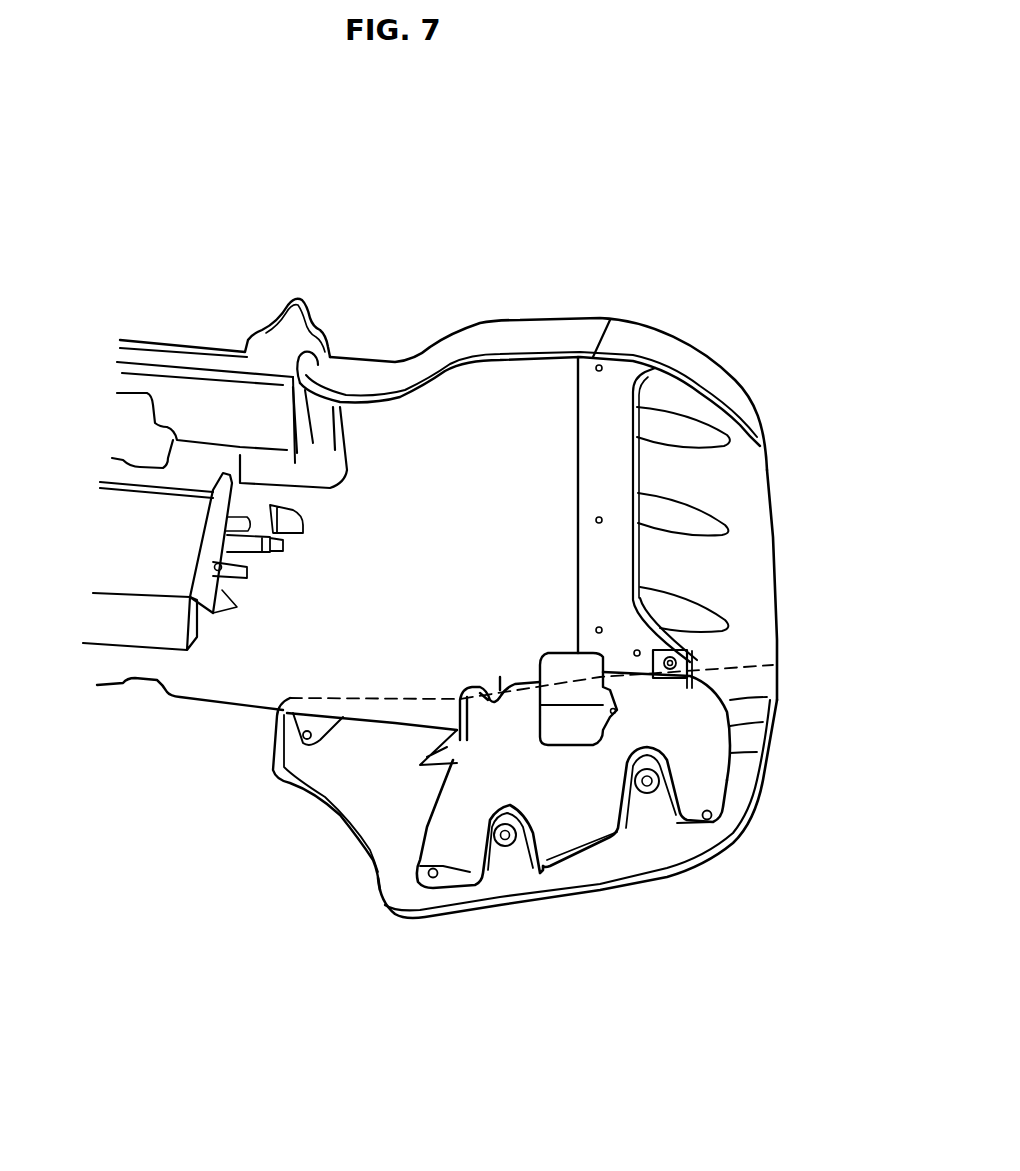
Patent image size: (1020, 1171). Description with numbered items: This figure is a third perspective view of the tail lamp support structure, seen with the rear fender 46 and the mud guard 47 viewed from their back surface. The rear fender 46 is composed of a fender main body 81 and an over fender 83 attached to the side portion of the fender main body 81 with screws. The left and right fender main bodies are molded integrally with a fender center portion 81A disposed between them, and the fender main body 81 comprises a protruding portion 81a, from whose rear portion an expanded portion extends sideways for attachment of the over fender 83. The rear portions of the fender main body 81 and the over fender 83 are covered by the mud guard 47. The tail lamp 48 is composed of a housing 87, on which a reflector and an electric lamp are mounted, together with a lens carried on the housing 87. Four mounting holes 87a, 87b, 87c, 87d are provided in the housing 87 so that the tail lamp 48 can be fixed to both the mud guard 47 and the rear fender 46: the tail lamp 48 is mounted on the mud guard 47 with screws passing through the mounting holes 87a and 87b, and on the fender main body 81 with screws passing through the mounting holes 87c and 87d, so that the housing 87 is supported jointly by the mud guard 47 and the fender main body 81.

The rear fender 46 is at (168, 713).
The mud guard 47 is at (336, 852).
The tail lamp 48 is at (577, 813).
The fender main body 81 is at (490, 323).
The fender center portion 81A is at (187, 344).
The protruding portion 81a is at (613, 451).
The over fender 83 is at (773, 512).
The housing 87 is at (687, 722).
The mounting hole 87a is at (713, 815).
The mounting hole 87b is at (432, 878).
The mounting hole 87c is at (460, 700).
The mounting hole 87d is at (693, 660).